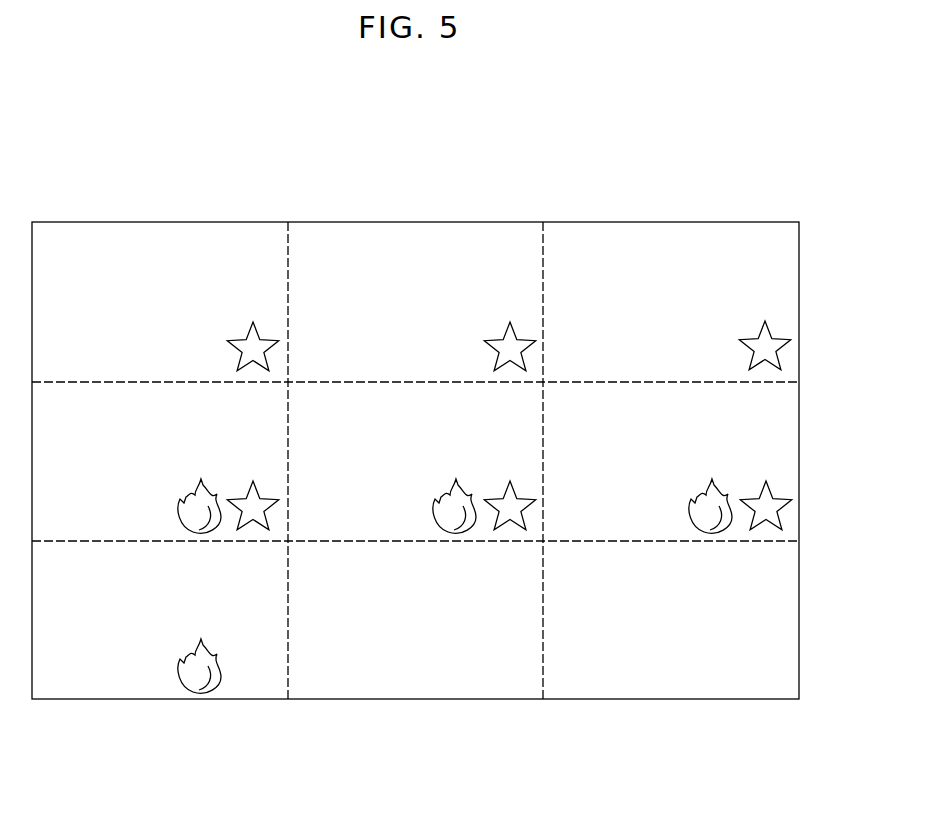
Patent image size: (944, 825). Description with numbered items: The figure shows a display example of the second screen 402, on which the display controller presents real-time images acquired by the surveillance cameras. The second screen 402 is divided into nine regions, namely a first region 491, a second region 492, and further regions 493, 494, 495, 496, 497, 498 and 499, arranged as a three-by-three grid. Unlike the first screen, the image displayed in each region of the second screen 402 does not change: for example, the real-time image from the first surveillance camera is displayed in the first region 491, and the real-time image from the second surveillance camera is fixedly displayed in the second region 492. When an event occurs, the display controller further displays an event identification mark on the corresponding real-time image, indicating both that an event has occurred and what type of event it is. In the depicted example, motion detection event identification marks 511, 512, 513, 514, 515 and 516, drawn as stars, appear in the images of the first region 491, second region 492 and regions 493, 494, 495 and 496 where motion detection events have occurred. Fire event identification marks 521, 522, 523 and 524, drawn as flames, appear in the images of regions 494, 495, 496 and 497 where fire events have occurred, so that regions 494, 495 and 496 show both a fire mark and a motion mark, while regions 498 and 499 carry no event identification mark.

The second screen 402 is at (436, 420).
The first region 491 is at (64, 241).
The second region 492 is at (319, 241).
The region 493 is at (575, 241).
The region 494 is at (64, 401).
The region 495 is at (319, 401).
The region 496 is at (577, 401).
The region 497 is at (64, 561).
The region 498 is at (319, 561).
The region 499 is at (577, 561).
The motion detection event identification mark 511 is at (250, 324).
The motion detection event identification mark 512 is at (507, 324).
The motion detection event identification mark 513 is at (762, 323).
The motion detection event identification mark 514 is at (250, 484).
The motion detection event identification mark 515 is at (507, 484).
The motion detection event identification mark 516 is at (763, 484).
The fire event identification mark 521 is at (194, 487).
The fire event identification mark 522 is at (449, 487).
The fire event identification mark 523 is at (705, 487).
The fire event identification mark 524 is at (194, 647).